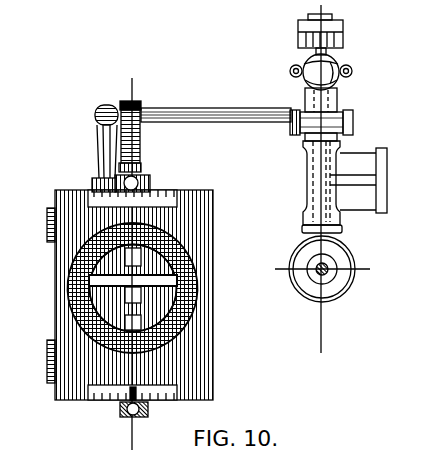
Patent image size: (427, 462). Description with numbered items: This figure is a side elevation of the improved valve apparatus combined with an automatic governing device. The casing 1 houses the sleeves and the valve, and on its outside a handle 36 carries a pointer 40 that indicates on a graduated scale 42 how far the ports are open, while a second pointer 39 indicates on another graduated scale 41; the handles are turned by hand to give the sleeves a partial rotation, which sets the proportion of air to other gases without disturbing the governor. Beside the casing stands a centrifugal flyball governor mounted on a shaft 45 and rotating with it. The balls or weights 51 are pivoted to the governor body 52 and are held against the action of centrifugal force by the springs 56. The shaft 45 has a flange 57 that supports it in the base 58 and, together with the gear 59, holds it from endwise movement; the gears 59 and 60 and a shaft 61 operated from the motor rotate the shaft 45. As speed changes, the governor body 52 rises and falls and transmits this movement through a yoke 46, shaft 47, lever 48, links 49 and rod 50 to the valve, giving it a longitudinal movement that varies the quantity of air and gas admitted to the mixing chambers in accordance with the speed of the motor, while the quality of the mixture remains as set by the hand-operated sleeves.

The casing 1 is at (214, 359).
The handle 36 is at (110, 184).
The pointer 39 is at (137, 392).
The pointer 40 is at (151, 192).
The graduated scale 41 is at (110, 393).
The graduated scale 42 is at (100, 202).
The shaft 45 is at (330, 98).
The yoke 46 is at (353, 118).
The shaft 47 is at (216, 109).
The lever 48 is at (141, 106).
The links 49 is at (141, 147).
The rod 50 is at (141, 172).
The balls or weights 51 is at (335, 66).
The governor body 52 is at (306, 99).
The springs 56 is at (297, 71).
The flange 57 is at (331, 141).
The base 58 is at (313, 188).
The gear 59 is at (346, 229).
The gear 60 is at (355, 258).
The shaft 61 is at (329, 273).